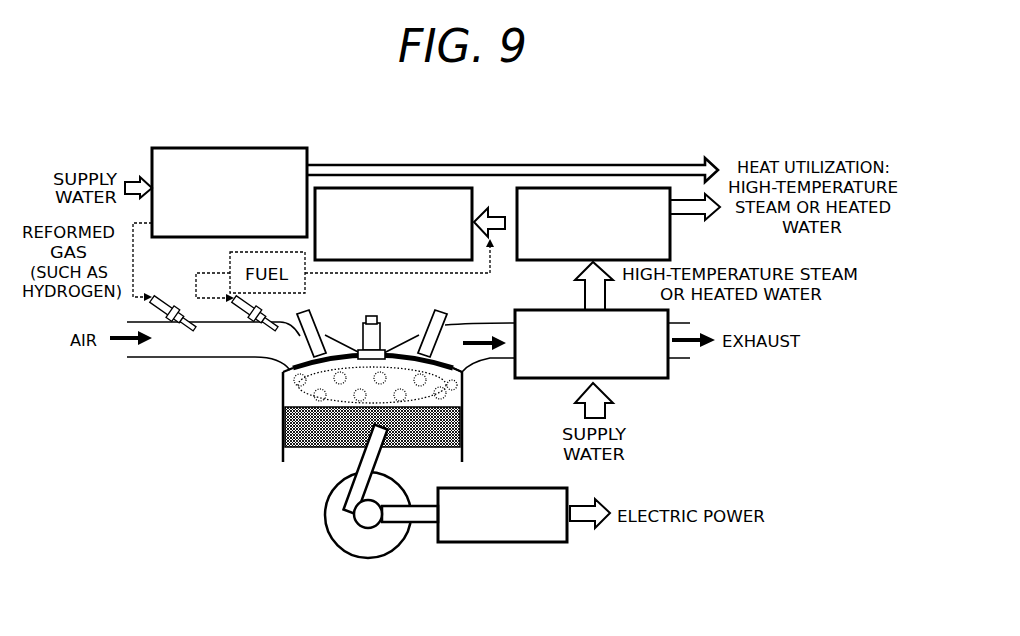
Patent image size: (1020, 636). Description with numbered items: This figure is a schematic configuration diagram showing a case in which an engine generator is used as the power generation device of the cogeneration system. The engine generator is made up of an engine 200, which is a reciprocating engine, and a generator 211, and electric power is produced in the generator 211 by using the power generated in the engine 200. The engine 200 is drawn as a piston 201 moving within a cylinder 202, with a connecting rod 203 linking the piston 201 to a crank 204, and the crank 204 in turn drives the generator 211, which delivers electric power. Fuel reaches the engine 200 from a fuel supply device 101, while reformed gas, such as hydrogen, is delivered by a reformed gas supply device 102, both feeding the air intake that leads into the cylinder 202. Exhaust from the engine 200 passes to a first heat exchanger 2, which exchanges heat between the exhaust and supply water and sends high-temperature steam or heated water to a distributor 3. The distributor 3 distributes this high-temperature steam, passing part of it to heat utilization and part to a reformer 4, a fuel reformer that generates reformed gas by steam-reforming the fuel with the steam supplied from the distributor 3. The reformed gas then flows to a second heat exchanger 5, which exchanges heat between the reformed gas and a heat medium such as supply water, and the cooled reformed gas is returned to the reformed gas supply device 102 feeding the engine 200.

The first heat exchanger 2 is at (650, 380).
The distributor 3 is at (631, 188).
The reformer 4 is at (422, 188).
The second heat exchanger 5 is at (264, 148).
The fuel supply device 101 is at (245, 324).
The reformed gas supply device 102 is at (165, 324).
The engine 200 is at (287, 435).
The piston 201 is at (305, 448).
The cylinder 202 is at (283, 393).
The connecting rod 203 is at (362, 463).
The crank 204 is at (326, 527).
The generator 211 is at (546, 545).